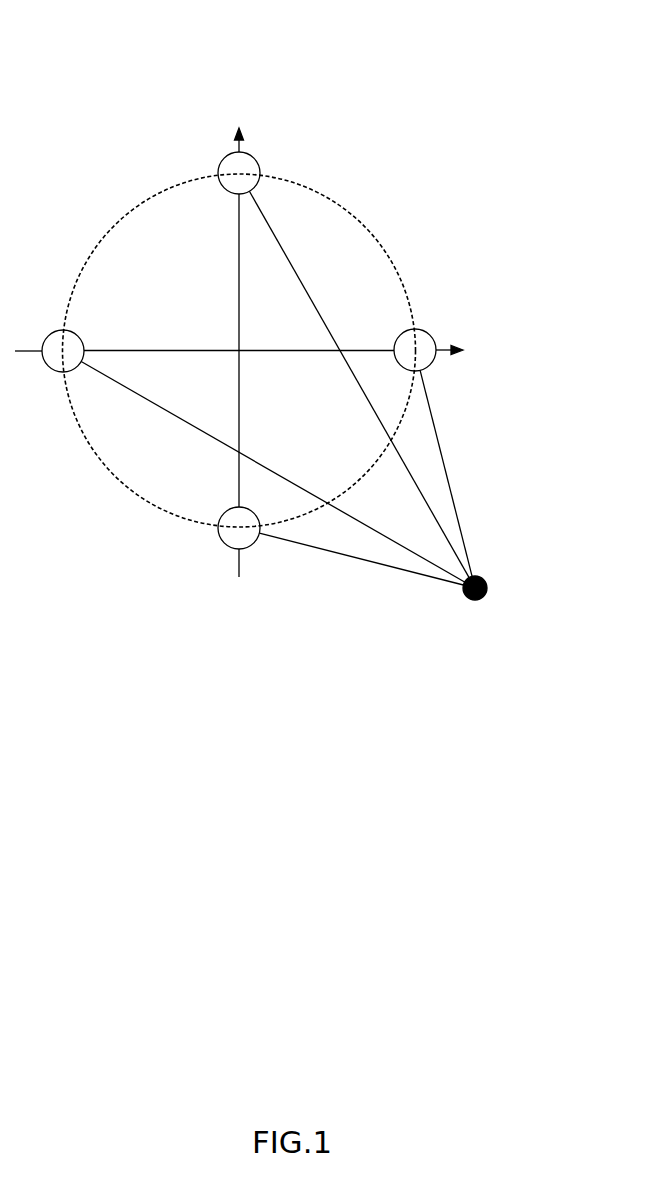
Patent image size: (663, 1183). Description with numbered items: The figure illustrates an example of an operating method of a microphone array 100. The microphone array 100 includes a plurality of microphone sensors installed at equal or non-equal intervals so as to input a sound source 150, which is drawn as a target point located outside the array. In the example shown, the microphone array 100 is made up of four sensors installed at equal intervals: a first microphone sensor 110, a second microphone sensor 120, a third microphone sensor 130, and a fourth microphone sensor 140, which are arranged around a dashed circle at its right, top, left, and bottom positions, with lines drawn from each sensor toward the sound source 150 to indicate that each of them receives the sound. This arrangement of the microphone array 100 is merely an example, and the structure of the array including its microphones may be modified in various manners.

The microphone array 100 is at (247, 78).
The first microphone sensor 110 is at (424, 331).
The second microphone sensor 120 is at (250, 154).
The third microphone sensor 130 is at (72, 331).
The fourth microphone sensor 140 is at (253, 546).
The sound source 150 is at (488, 574).